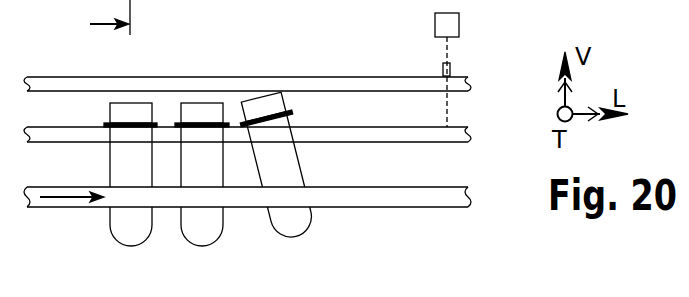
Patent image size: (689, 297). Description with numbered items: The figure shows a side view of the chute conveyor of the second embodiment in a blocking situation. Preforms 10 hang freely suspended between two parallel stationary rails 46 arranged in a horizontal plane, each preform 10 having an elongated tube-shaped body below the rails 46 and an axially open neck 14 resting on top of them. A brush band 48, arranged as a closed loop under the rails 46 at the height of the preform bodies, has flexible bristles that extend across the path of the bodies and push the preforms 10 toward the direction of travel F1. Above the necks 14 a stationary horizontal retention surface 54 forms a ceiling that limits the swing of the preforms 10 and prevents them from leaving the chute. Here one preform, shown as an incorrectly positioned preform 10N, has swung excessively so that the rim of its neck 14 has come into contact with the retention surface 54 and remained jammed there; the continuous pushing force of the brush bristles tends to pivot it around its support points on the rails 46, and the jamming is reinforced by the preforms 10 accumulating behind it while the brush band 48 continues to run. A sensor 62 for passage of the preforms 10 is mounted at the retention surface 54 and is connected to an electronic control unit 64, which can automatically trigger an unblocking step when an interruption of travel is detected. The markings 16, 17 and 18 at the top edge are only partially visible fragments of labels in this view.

The preform 10 is at (124, 222).
The incorrectly positioned preform 10N is at (295, 220).
The neck 14 is at (262, 110).
The container 16 is at (184, 4).
The reference position 17 is at (109, 17).
The container 18 is at (371, 6).
The rail 46 is at (450, 134).
The brush band 48 is at (425, 197).
The retention surface 54 is at (462, 92).
The sensor 62 is at (450, 70).
The electronic control unit 64 is at (450, 25).
The direction of travel F1 is at (58, 203).